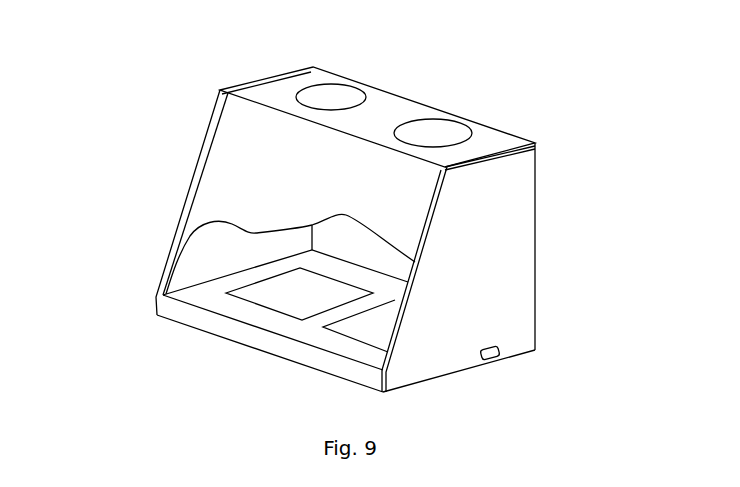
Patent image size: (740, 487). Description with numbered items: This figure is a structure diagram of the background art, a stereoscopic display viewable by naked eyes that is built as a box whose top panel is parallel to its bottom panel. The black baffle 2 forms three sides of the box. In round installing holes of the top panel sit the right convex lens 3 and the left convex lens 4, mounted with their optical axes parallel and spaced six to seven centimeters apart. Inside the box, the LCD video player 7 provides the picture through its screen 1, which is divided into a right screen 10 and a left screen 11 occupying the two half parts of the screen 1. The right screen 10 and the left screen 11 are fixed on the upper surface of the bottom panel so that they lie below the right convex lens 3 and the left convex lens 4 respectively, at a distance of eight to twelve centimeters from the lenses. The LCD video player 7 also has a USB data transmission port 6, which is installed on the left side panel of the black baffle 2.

The screen 1 is at (308, 332).
The black baffle 2 is at (240, 173).
The right convex lens 3 is at (332, 100).
The left convex lens 4 is at (438, 133).
The USB data transmission port 6 is at (497, 360).
The LCD video player 7 is at (237, 333).
The right screen 10 is at (222, 308).
The left screen 11 is at (368, 332).